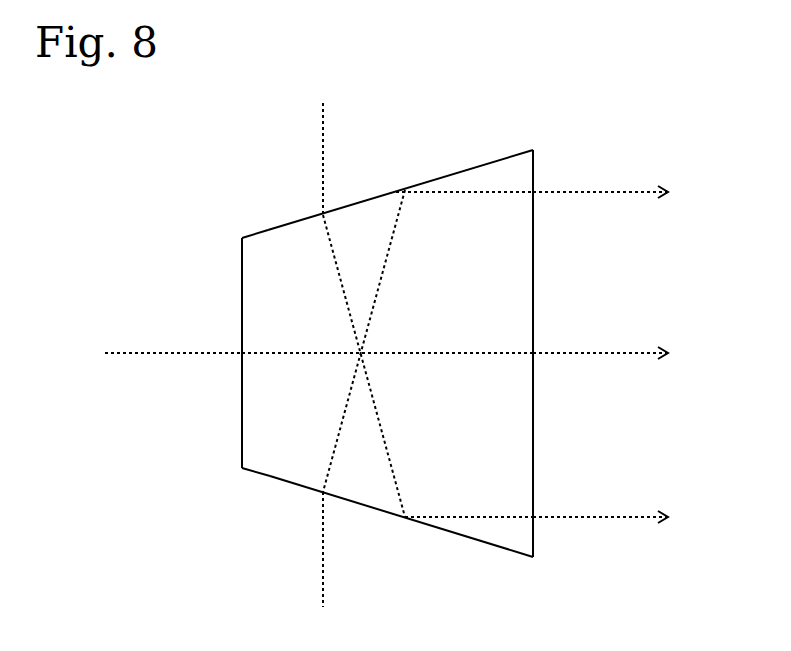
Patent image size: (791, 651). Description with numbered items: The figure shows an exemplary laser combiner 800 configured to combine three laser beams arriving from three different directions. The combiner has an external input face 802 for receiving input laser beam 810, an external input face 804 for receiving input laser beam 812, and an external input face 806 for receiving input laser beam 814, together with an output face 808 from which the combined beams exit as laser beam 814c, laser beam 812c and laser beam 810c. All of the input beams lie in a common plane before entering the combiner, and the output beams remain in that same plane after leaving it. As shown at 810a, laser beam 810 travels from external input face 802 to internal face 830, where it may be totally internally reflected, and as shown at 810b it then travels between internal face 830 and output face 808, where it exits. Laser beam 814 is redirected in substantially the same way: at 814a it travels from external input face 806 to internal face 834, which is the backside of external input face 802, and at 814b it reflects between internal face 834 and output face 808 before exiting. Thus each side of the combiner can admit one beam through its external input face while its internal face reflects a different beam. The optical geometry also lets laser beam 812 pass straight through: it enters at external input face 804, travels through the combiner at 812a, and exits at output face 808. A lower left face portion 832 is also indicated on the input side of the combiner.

The laser combiner 800 is at (133, 207).
The external input face 802 is at (247, 236).
The external input face 804 is at (240, 295).
The external input face 806 is at (247, 478).
The output face 808 is at (540, 172).
The laser beam 810 is at (318, 118).
The laser beam path segment 810a is at (387, 422).
The laser beam path segment 810b is at (470, 515).
The output laser beam 810c is at (623, 528).
The laser beam 812 is at (133, 368).
The laser beam path segment 812a is at (470, 350).
The output laser beam 812c is at (623, 363).
The laser beam 814 is at (318, 585).
The laser beam path segment 814a is at (385, 290).
The laser beam path segment 814b is at (470, 196).
The output laser beam 814c is at (623, 200).
The internal face 830 is at (265, 470).
The lower left surface portion 832 is at (245, 417).
The internal face 834 is at (270, 240).